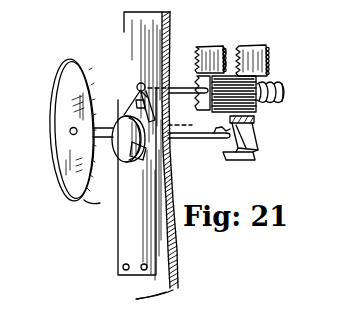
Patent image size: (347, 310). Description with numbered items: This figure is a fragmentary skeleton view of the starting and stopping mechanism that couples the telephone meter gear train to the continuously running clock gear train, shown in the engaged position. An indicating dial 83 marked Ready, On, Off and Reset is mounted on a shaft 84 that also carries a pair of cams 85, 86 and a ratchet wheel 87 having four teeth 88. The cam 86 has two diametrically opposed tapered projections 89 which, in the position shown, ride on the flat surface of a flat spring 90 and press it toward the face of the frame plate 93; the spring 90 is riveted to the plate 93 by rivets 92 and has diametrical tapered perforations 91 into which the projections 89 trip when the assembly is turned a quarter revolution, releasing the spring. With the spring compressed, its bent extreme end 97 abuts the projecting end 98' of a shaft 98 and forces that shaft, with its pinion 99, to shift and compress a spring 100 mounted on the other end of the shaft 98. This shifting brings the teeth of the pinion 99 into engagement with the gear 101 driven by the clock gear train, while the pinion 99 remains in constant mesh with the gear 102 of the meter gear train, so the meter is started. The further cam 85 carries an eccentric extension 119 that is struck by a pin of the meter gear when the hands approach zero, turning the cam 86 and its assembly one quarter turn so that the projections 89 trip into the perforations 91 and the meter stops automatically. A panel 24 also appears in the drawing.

The wall panel 24 is at (160, 61).
The indicating disc 83 is at (62, 152).
The shaft 84 is at (208, 139).
The cam 85 is at (118, 122).
The cam 86 is at (128, 115).
The ratchet wheel 87 is at (255, 156).
The teeth 88 is at (254, 121).
The tapered projections 89 is at (140, 156).
The flat spring 90 is at (128, 220).
The tapered perforations 91 is at (148, 120).
The rivets 92 is at (142, 270).
The frame plate 93 is at (178, 286).
The spring end 97 is at (143, 90).
The shaft 98 is at (178, 79).
The shaft end 98' is at (195, 65).
The pinion 99 is at (257, 108).
The spring 100 is at (282, 106).
The gear 101 is at (268, 50).
The gear 102 is at (232, 46).
The eccentric extension 119 is at (98, 203).